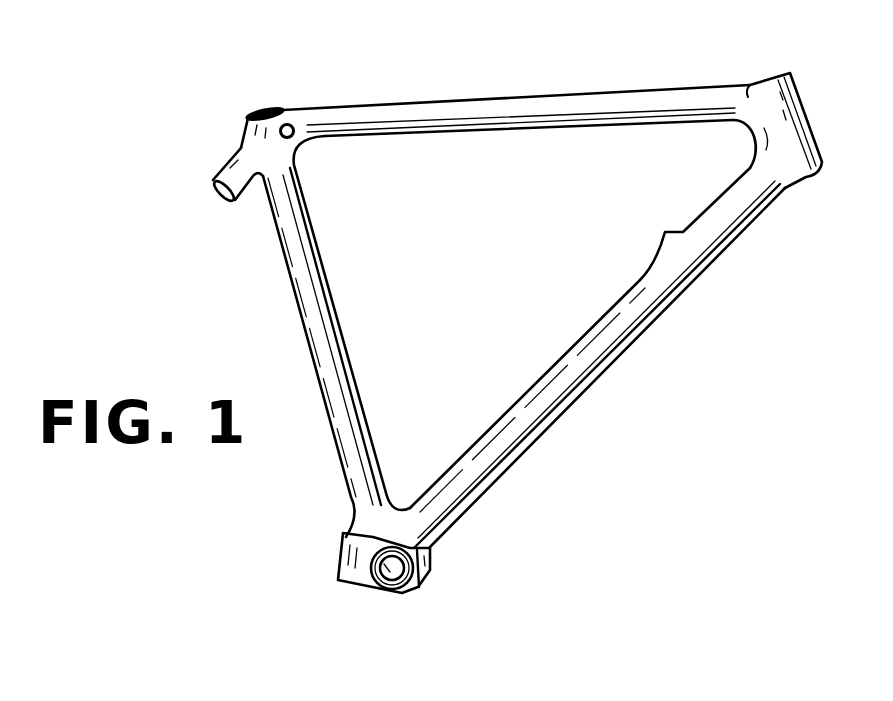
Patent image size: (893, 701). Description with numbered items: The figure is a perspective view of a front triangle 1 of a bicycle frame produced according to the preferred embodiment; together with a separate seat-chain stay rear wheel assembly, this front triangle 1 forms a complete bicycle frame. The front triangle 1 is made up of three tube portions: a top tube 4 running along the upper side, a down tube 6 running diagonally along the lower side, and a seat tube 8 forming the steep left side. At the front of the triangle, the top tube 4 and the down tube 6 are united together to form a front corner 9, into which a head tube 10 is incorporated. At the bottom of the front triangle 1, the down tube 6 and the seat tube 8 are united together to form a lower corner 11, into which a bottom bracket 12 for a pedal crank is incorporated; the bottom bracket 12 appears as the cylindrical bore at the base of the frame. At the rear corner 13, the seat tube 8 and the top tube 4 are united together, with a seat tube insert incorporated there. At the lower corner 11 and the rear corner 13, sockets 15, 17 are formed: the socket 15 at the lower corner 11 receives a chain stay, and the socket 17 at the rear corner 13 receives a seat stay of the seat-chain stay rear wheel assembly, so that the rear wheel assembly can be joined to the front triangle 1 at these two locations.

The front triangle 1 is at (438, 96).
The top tube portion 4 is at (500, 122).
The down tube portion 6 is at (593, 328).
The seat tube portion 8 is at (318, 298).
The front corner 9 is at (745, 146).
The head tube 10 is at (805, 180).
The lower corner 11 is at (430, 565).
The bottom bracket 12 is at (388, 585).
The rear corner 13 is at (300, 148).
The socket 15 is at (340, 582).
The socket 17 is at (216, 205).